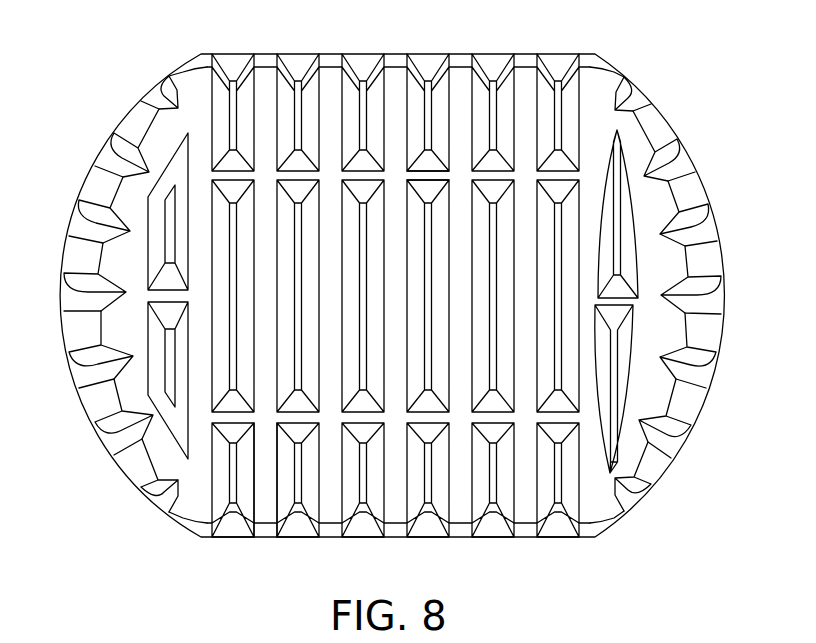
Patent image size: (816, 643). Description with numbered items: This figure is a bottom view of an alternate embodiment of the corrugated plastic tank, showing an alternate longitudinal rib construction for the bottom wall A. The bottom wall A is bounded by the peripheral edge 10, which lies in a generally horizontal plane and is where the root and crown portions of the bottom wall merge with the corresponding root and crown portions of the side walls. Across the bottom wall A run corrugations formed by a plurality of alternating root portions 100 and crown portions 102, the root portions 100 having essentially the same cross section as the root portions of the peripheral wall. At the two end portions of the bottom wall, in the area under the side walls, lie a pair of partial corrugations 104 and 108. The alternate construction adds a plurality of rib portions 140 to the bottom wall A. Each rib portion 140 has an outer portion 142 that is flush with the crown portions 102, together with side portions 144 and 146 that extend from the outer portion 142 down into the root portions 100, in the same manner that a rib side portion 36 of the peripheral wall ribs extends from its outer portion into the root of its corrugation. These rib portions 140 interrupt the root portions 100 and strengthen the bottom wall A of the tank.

The peripheral edge 10 is at (197, 65).
The bottom wall A is at (152, 123).
The rib side portion 36 is at (428, 525).
The root portion 100 is at (240, 503).
The crown portion 102 is at (260, 503).
The partial corrugation 104 is at (175, 430).
The partial corrugation 108 is at (623, 400).
The rib portion 140 is at (572, 142).
The outer portion 142 is at (430, 177).
The side portion 144 is at (425, 187).
The side portion 146 is at (422, 165).